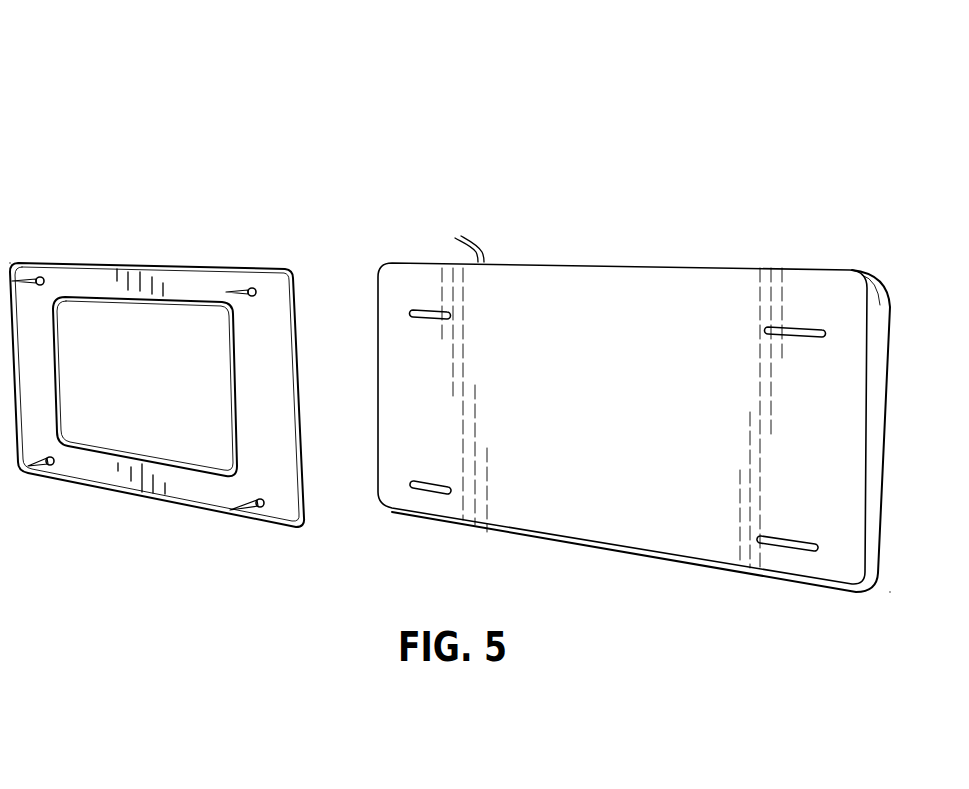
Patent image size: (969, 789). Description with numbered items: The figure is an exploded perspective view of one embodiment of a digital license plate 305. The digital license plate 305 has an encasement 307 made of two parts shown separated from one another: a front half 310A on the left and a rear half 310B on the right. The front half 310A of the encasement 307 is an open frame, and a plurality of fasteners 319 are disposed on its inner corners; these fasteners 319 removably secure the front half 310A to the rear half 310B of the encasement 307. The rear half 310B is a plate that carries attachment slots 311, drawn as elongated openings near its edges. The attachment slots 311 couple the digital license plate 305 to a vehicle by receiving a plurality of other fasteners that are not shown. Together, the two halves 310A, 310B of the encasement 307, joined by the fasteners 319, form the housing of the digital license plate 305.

The digital license plate 305 is at (118, 80).
The encasement 307 is at (159, 229).
The front half of the encasement 310A is at (88, 262).
The rear half of the encasement 310B is at (433, 262).
The attachment slots 311 is at (450, 313).
The fasteners 319 is at (232, 293).